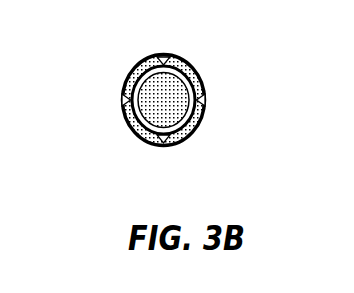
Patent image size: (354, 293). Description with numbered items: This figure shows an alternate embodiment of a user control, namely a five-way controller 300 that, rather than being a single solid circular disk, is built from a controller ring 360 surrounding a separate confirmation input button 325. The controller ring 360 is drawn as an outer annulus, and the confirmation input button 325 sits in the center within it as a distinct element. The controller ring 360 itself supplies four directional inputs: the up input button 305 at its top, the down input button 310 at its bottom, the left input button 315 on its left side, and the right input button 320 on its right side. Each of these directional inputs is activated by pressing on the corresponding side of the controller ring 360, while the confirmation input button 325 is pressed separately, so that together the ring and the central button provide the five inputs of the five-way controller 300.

The five-way controller 300 is at (208, 105).
The up input button 305 is at (160, 52).
The down input button 310 is at (160, 146).
The left input button 315 is at (124, 101).
The right input button 320 is at (204, 100).
The confirmation input button 325 is at (169, 98).
The controller ring 360 is at (181, 145).